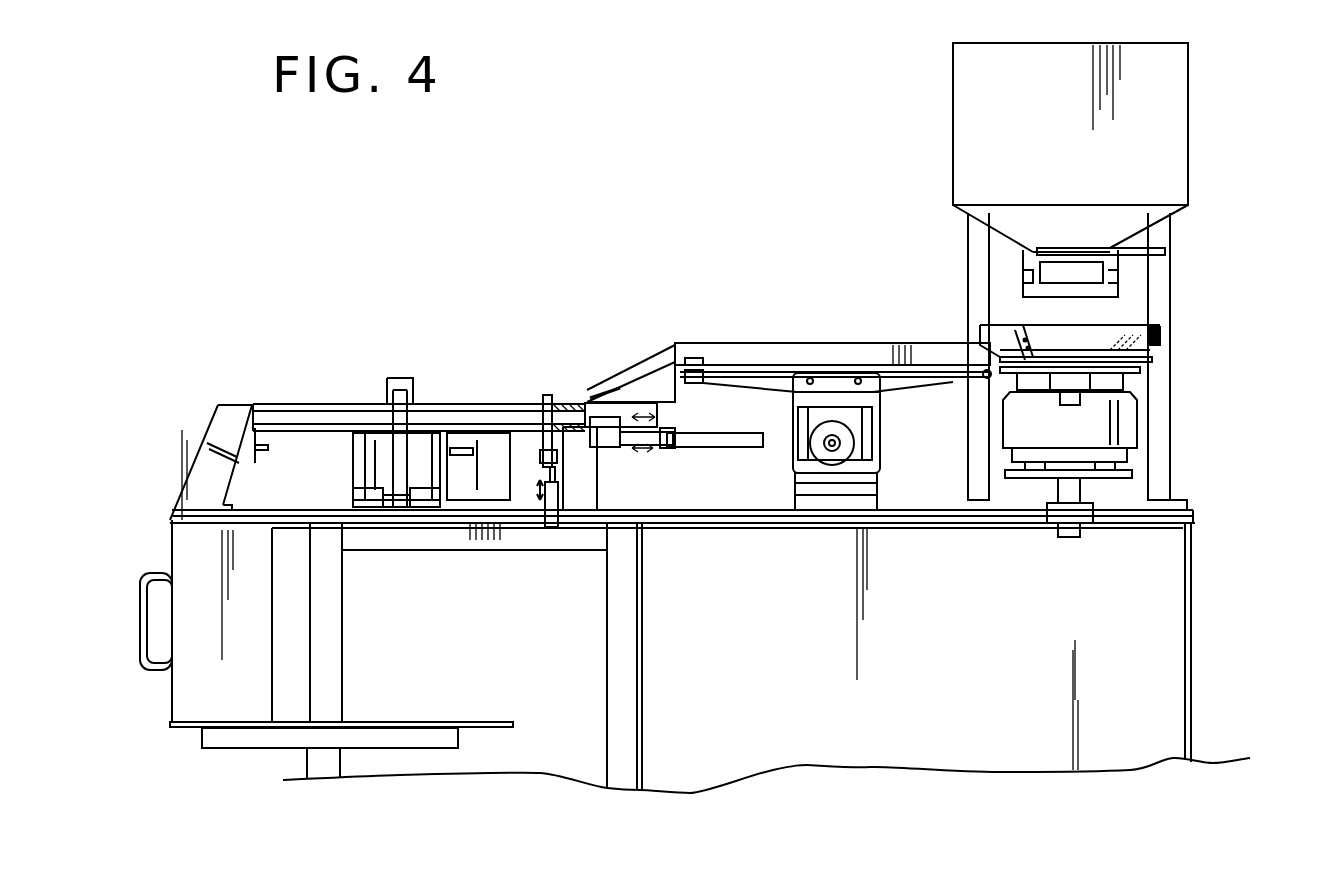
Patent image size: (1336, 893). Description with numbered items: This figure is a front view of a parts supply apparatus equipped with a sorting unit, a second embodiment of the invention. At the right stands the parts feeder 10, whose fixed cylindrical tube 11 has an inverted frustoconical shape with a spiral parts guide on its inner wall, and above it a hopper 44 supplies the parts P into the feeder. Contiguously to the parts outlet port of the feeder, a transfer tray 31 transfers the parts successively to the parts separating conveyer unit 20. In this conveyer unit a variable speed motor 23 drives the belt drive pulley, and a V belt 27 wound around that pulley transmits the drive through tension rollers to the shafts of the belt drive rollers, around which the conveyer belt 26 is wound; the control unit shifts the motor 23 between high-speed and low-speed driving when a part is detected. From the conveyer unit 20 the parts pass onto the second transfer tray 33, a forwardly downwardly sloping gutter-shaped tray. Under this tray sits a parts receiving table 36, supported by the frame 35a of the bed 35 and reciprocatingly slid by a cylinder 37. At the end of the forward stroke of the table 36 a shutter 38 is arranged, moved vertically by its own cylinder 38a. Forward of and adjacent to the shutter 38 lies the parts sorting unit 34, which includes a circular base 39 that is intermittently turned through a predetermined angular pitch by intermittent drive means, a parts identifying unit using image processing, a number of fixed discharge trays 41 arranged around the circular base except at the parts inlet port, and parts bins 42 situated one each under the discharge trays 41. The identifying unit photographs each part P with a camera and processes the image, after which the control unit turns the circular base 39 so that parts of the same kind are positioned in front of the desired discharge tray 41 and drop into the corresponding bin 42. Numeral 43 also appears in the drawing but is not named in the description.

The parts feeder 10 is at (1106, 401).
The fixed cylindrical tube 11 is at (1204, 348).
The parts separating conveyer unit 20 is at (794, 362).
The variable speed motor 23 is at (835, 443).
The conveyer belt 26 is at (763, 365).
The V belt 27 is at (787, 393).
The transfer tray 31 is at (1010, 333).
The second transfer tray 33 is at (647, 370).
The parts sorting unit 34 is at (433, 377).
The bed 35 is at (1198, 578).
The frame 35a is at (676, 522).
The parts receiving table 36 is at (620, 448).
The cylinder 37 is at (715, 447).
The shutter 38 is at (543, 395).
The cylinder 38a is at (552, 527).
The circular base 39 is at (318, 432).
The discharge tray 41 is at (187, 490).
The parts bin 42 is at (188, 687).
The stopper 43 is at (530, 435).
The hopper 44 is at (1165, 130).
The part P is at (572, 397).